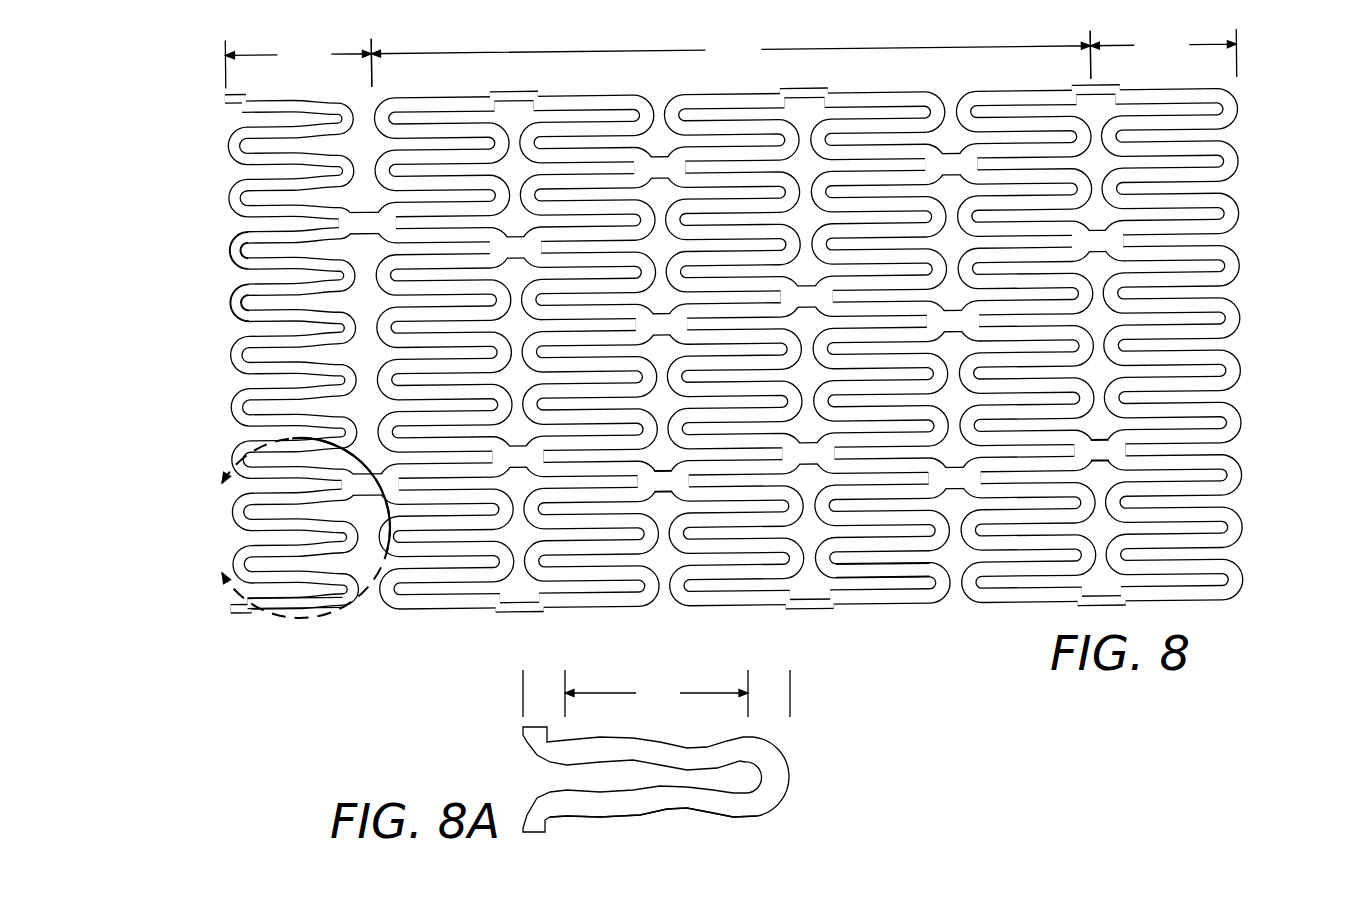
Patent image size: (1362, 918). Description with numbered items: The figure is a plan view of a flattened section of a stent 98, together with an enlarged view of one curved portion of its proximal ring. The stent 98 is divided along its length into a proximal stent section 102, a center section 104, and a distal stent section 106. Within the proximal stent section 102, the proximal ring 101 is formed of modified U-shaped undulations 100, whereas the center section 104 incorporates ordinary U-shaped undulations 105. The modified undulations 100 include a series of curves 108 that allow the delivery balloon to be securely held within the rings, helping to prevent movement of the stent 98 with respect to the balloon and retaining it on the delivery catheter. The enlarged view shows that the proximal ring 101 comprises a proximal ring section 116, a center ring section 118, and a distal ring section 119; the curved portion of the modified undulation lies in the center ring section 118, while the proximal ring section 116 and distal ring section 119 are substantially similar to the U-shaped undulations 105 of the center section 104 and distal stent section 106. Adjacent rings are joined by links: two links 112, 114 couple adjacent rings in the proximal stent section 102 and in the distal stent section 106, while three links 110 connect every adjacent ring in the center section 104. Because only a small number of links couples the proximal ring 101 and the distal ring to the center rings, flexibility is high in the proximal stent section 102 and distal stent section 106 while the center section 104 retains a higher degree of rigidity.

In FIG. 8, the stent 98 is at (218, 198).
In FIG. 8, the modified U-shaped undulations 100 is at (236, 299).
In FIG. 8, the proximal ring 101 is at (246, 237).
In FIG. 8A, the proximal ring 101 is at (773, 798).
In FIG. 8, the proximal stent section 102 is at (298, 64).
In FIG. 8, the center section 104 is at (730, 59).
In FIG. 8, the U-shaped undulations 105 is at (892, 570).
In FIG. 8, the second end region 106 is at (1163, 54).
In FIG. 8, the curves 108 is at (290, 604).
In FIG. 8A, the curves 108 is at (627, 820).
In FIG. 8, the links 110 is at (660, 473).
In FIG. 8, the link 112 is at (305, 437).
In FIG. 8, the link 114 is at (1091, 460).
In FIG. 8A, the proximal ring section 116 is at (546, 687).
In FIG. 8A, the center ring section 118 is at (656, 693).
In FIG. 8A, the distal ring section 119 is at (773, 690).